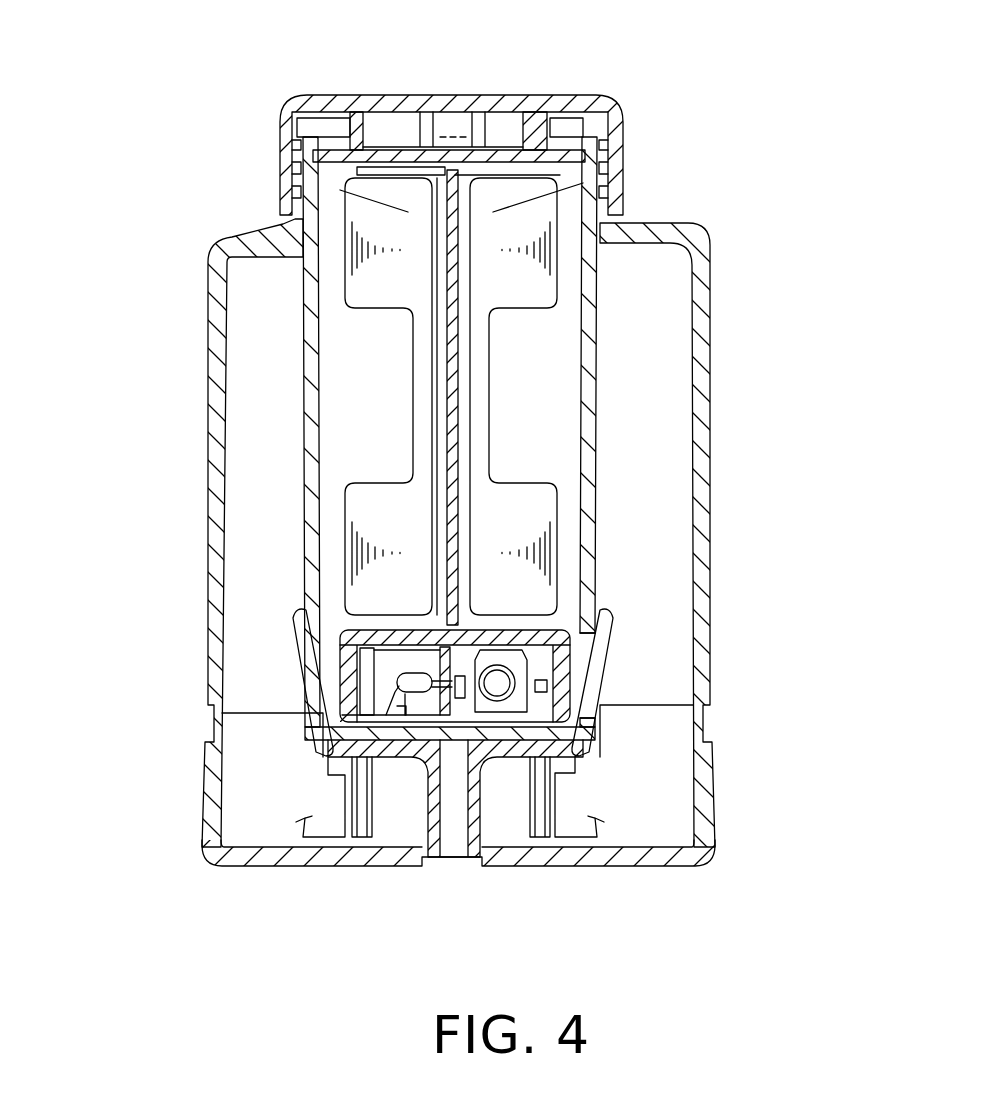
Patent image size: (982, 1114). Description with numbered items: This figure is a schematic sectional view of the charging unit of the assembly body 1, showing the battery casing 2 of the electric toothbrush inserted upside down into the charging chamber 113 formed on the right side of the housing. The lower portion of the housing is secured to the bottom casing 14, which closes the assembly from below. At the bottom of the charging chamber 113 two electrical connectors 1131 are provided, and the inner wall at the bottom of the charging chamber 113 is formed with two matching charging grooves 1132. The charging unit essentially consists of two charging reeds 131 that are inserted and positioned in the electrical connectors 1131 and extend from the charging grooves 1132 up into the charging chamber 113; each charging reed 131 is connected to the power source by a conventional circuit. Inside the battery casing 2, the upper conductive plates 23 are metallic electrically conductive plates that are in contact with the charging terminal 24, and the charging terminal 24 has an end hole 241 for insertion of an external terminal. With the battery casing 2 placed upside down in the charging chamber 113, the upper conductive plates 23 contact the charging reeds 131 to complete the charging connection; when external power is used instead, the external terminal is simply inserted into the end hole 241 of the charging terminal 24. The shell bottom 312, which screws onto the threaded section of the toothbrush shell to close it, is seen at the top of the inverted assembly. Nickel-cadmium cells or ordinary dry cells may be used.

The assembly body 1 is at (247, 245).
The bottom casing 14 is at (292, 860).
The charging chamber 113 is at (570, 273).
The electrical connectors 1131 is at (348, 793).
The charging grooves 1132 is at (585, 663).
The charging reeds 131 is at (293, 655).
The battery casing 2 is at (522, 411).
The upper conductive plates 23 is at (343, 705).
The charging terminal 24 is at (537, 703).
The end hole 241 is at (500, 690).
The shell bottom 312 is at (557, 98).